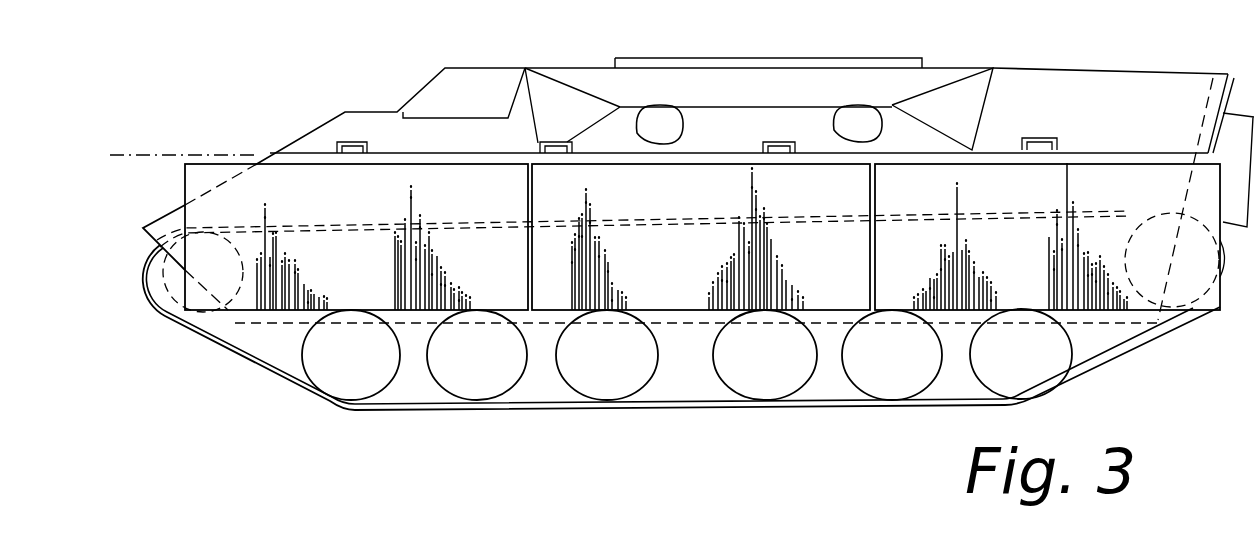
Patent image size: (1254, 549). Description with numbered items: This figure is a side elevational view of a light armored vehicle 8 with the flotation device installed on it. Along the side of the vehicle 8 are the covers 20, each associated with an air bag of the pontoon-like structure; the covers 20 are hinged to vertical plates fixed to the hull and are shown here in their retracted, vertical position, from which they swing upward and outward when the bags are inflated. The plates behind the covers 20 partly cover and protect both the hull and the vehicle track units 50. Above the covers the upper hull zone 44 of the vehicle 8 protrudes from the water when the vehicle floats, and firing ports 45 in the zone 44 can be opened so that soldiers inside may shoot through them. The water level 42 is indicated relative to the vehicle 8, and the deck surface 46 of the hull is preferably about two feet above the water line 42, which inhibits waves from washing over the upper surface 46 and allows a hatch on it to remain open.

The vehicle 8 is at (322, 126).
The water level 42 is at (135, 153).
The upper hull zone 44 is at (915, 130).
The firing ports 45 is at (677, 130).
The deck surface 46 is at (1098, 68).
The covers 20 is at (350, 293).
The vehicle track units 50 is at (1127, 348).